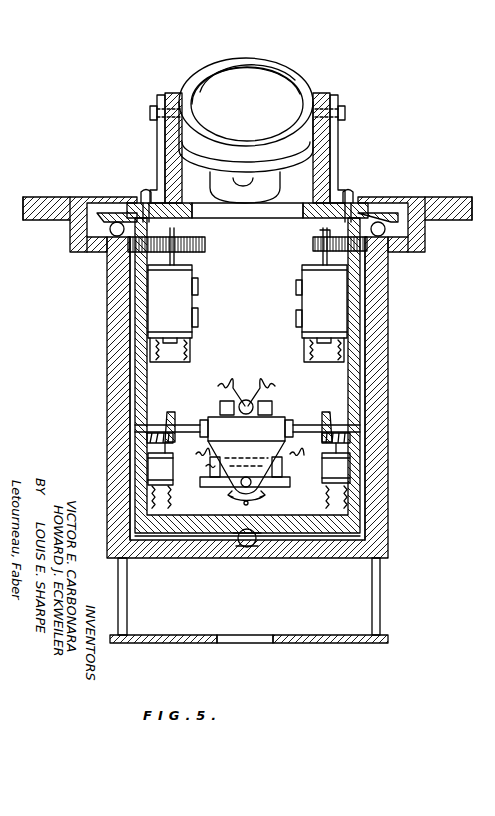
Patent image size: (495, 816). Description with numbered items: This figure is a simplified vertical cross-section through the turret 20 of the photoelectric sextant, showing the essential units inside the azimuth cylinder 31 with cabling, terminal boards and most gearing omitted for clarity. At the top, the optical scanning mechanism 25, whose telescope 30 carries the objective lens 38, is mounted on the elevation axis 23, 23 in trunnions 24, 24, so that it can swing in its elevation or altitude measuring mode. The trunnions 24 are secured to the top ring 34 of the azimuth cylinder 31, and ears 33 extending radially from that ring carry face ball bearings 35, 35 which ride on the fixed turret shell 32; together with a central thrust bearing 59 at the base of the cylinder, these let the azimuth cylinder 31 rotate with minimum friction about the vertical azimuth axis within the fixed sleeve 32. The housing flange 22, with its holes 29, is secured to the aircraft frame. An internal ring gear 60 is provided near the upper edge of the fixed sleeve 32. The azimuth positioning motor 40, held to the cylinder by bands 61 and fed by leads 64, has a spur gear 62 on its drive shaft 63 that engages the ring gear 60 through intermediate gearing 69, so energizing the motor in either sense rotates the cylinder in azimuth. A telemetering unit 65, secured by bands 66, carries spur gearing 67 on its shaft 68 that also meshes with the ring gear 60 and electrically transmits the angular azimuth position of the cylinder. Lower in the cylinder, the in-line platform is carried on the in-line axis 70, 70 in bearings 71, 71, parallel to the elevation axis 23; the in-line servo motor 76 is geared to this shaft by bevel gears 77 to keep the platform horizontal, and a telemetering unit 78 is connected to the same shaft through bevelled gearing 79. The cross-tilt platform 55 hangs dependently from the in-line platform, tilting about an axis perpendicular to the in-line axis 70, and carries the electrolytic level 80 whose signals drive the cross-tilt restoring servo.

The turret 20 is at (107, 394).
The flange 22 is at (247, 226).
The elevation axis 23 is at (150, 112).
The trunnions 24 is at (168, 146).
The optical scanning mechanism 25 is at (268, 182).
The holes 29 is at (50, 197).
The telescope 30 is at (258, 111).
The azimuth cylinder 31 is at (142, 468).
The fixed turret shell 32 is at (152, 560).
The ears 33 is at (112, 213).
The top ring 34 is at (181, 204).
The face ball bearings 35 is at (104, 240).
The objective lens 38 is at (291, 71).
The azimuth positioning motor 40 is at (330, 312).
The cross-tilt platform 55 is at (278, 485).
The central thrust bearing 59 is at (243, 548).
The internal ring gear 60 is at (112, 281).
The bands 61 is at (296, 318).
The spur gear 62 is at (313, 243).
The drive shaft 63 is at (330, 255).
The leads 64 is at (324, 359).
The telemetering unit 65 is at (178, 306).
The bands 66 is at (200, 290).
The spur gearing 67 is at (207, 243).
The shaft 68 is at (178, 259).
The intermediate gearing 69 is at (342, 231).
The in-line axis 70 is at (189, 423).
The bearings 71 is at (153, 417).
The in-line servo motor 76 is at (344, 474).
The bevel gears 77 is at (327, 412).
The telemetering unit 78 is at (168, 475).
The bevelled gearing 79 is at (170, 414).
The electrolytic level 80 is at (207, 471).